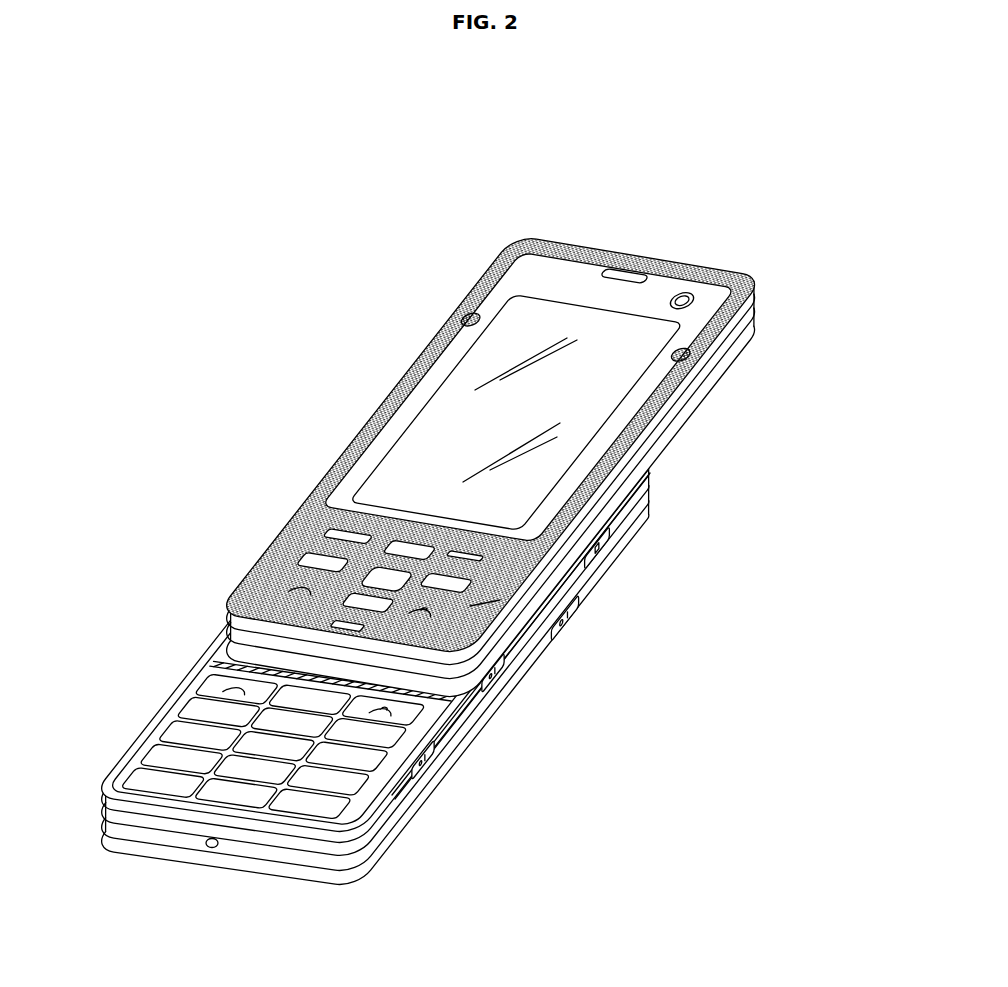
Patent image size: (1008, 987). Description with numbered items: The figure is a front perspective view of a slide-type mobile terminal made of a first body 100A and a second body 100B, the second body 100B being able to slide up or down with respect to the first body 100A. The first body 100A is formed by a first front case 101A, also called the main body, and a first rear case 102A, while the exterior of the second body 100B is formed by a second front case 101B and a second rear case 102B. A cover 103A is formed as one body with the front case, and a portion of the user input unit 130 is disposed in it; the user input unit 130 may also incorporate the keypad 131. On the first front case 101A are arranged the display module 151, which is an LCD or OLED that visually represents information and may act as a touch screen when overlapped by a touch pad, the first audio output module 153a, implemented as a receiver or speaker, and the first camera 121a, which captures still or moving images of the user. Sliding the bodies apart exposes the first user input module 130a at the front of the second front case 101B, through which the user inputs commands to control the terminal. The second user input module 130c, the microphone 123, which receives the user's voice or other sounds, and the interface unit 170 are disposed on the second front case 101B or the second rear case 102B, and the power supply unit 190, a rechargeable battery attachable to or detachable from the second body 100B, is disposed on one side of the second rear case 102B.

The first body 100A is at (530, 453).
The second body 100B is at (415, 683).
The first front case 101A is at (490, 451).
The first rear case 102A is at (488, 483).
The cover 103A is at (488, 467).
The second front case 101B is at (373, 639).
The second rear case 102B is at (371, 667).
The display module 151 is at (516, 413).
The first audio output module 153a is at (625, 275).
The first camera 121a is at (682, 300).
The user input unit 130 is at (374, 585).
The first user input module 130a is at (285, 741).
The second user input module 130c is at (441, 748).
The keypad 131 is at (488, 604).
The interface unit 170 is at (588, 582).
The power supply unit 190 is at (528, 648).
The microphone 123 is at (213, 849).